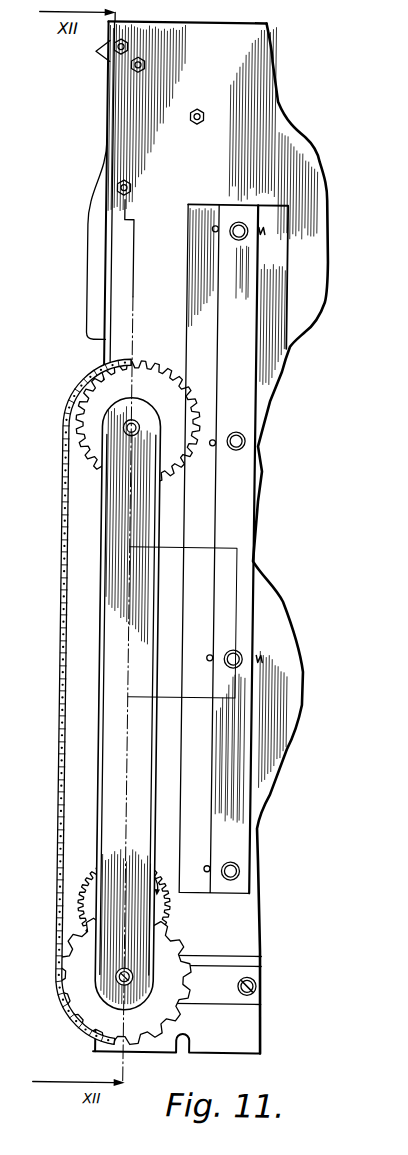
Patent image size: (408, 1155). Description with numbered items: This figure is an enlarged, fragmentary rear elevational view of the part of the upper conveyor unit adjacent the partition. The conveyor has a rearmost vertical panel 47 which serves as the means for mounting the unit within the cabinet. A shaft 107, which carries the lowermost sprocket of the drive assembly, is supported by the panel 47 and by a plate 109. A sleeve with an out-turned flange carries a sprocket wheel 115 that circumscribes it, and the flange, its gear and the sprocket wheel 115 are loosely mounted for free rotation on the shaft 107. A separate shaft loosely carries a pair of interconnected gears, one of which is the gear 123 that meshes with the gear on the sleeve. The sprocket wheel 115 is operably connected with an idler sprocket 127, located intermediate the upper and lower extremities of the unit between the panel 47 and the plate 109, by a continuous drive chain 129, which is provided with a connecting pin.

The vertical panel 47 is at (298, 315).
The shaft 107 is at (134, 972).
The plate 109 is at (141, 837).
The sprocket wheel 115 is at (164, 938).
The gear 123 is at (165, 901).
The idler sprocket 127 is at (175, 450).
The drive chain 129 is at (65, 827).